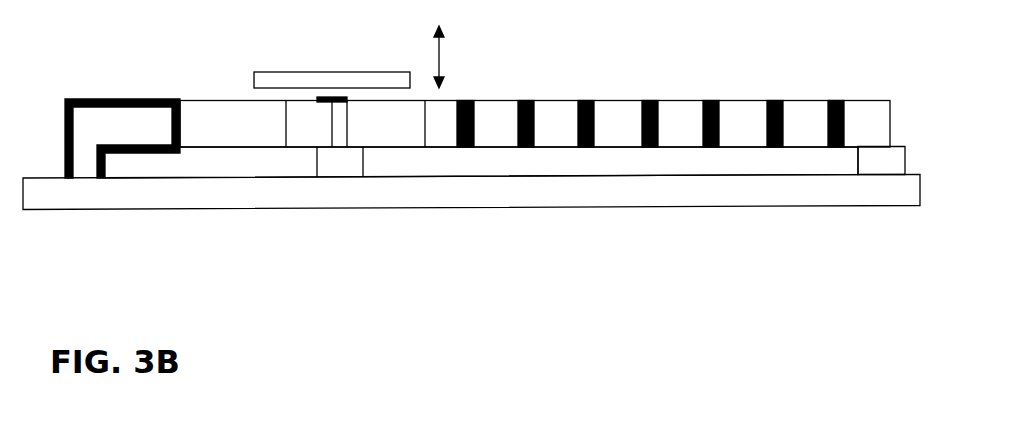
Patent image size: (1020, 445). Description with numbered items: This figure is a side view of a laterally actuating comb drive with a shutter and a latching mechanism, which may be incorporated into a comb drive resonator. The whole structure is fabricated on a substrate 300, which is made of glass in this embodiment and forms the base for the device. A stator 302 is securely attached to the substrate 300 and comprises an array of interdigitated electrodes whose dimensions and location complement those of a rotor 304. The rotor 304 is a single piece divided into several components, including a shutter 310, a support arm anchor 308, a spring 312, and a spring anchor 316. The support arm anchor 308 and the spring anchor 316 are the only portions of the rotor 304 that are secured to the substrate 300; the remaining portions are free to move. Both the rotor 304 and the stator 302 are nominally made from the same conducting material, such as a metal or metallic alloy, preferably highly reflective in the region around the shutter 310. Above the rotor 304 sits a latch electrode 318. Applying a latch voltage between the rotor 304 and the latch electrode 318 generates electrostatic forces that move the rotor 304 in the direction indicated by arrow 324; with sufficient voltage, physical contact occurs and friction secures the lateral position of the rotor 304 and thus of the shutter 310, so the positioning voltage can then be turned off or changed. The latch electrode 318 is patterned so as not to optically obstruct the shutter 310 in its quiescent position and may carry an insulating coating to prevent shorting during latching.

The substrate 300 is at (85, 209).
The stator 302 is at (138, 132).
The rotor 304 is at (219, 132).
The support arm anchor 308 is at (329, 163).
The shutter 310 is at (328, 99).
The spring 312 is at (486, 132).
The spring anchor 316 is at (882, 160).
The latch electrode 318 is at (338, 72).
The arrow 324 is at (445, 68).